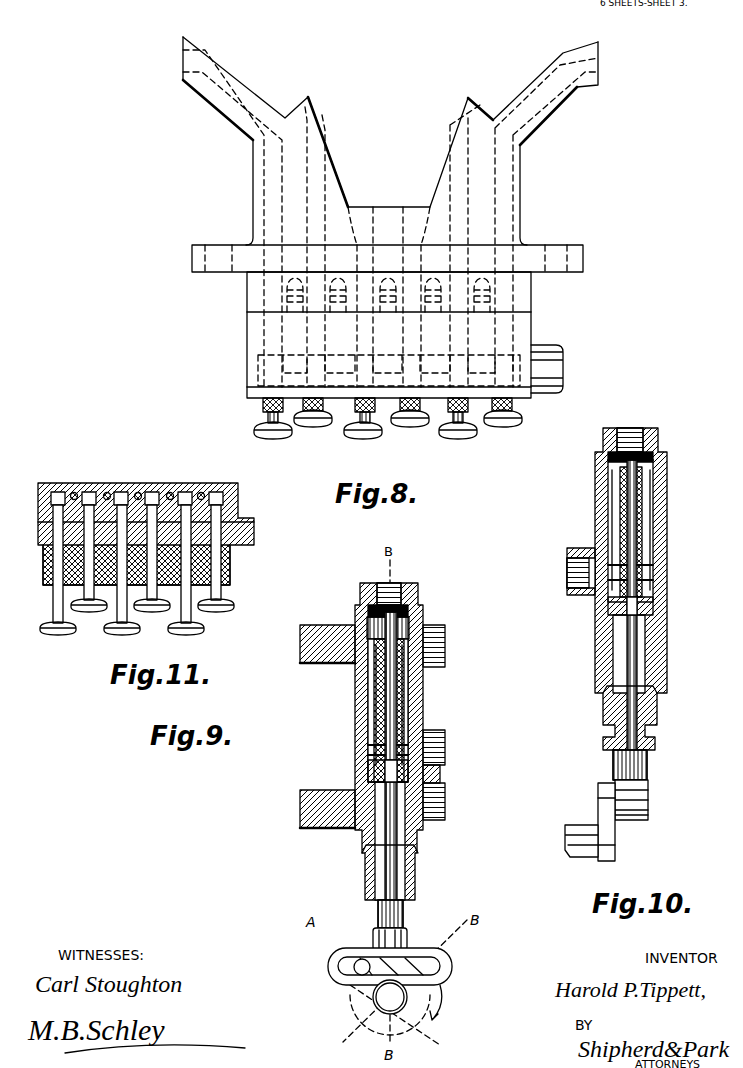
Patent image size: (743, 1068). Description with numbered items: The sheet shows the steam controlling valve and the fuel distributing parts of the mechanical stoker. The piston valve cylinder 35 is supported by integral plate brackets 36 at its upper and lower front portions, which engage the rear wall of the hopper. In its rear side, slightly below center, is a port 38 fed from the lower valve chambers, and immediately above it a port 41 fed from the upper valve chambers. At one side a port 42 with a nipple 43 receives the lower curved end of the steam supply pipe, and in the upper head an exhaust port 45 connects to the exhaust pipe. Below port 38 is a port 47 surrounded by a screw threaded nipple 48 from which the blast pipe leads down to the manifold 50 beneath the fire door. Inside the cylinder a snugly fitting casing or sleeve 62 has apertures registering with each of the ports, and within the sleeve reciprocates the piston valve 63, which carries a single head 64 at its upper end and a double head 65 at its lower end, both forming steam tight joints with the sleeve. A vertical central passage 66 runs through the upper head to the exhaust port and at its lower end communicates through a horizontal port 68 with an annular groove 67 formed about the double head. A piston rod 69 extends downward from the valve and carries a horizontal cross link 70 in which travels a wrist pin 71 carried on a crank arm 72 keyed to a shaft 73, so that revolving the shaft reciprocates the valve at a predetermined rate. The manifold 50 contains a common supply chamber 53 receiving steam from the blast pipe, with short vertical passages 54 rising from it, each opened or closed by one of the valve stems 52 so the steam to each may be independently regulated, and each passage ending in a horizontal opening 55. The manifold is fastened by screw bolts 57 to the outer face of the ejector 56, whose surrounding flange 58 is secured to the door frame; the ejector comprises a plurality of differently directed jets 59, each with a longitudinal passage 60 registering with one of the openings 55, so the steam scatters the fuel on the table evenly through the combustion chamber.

In FIG. 9, the piston valve cylinder 35 is at (362, 697).
In FIG. 10, the piston valve cylinder 35 is at (600, 512).
In FIG. 9, the plate brackets 36 is at (303, 642).
In FIG. 9, the port 38 is at (447, 750).
In FIG. 9, the port 41 is at (444, 650).
In FIG. 10, the port 42 is at (603, 569).
In FIG. 10, the nipple 43 is at (568, 556).
In FIG. 9, the exhaust port 45 is at (418, 592).
In FIG. 10, the exhaust port 45 is at (620, 461).
In FIG. 9, the port 47 is at (447, 805).
In FIG. 9, the screw threaded nipple 48 is at (442, 783).
In FIG. 8, the manifold 50 is at (522, 330).
In FIG. 8, the valve stems 52 is at (318, 428).
In FIG. 11, the valve stems 52 is at (92, 612).
In FIG. 11, the common supply chamber 53 is at (240, 513).
In FIG. 11, the vertical passages 54 is at (243, 498).
In FIG. 11, the horizontal opening 55 is at (85, 488).
In FIG. 8, the ejector 56 is at (258, 217).
In FIG. 8, the screw bolts 57 is at (263, 410).
In FIG. 8, the surrounding flange 58 is at (192, 250).
In FIG. 8, the jets 59 is at (215, 56).
In FIG. 8, the longitudinal passage 60 is at (450, 150).
In FIG. 9, the casing or sleeve 62 is at (410, 675).
In FIG. 10, the casing or sleeve 62 is at (617, 488).
In FIG. 9, the piston valve 63 is at (383, 677).
In FIG. 10, the piston valve 63 is at (640, 502).
In FIG. 9, the single head 64 is at (365, 622).
In FIG. 10, the single head 64 is at (668, 463).
In FIG. 9, the double head 65 is at (373, 748).
In FIG. 10, the double head 65 is at (652, 567).
In FIG. 9, the vertical central passage 66 is at (393, 697).
In FIG. 10, the vertical central passage 66 is at (632, 540).
In FIG. 9, the annular groove 67 is at (370, 751).
In FIG. 10, the annular groove 67 is at (652, 582).
In FIG. 9, the horizontal port 68 is at (385, 764).
In FIG. 10, the horizontal port 68 is at (620, 596).
In FIG. 9, the piston rod 69 is at (387, 890).
In FIG. 10, the piston rod 69 is at (630, 713).
In FIG. 9, the horizontal cross link 70 is at (446, 966).
In FIG. 10, the horizontal cross link 70 is at (637, 798).
In FIG. 9, the wrist pin 71 is at (360, 962).
In FIG. 9, the crank arm 72 is at (374, 992).
In FIG. 10, the crank arm 72 is at (607, 812).
In FIG. 9, the shaft 73 is at (405, 1000).
In FIG. 10, the shaft 73 is at (573, 850).